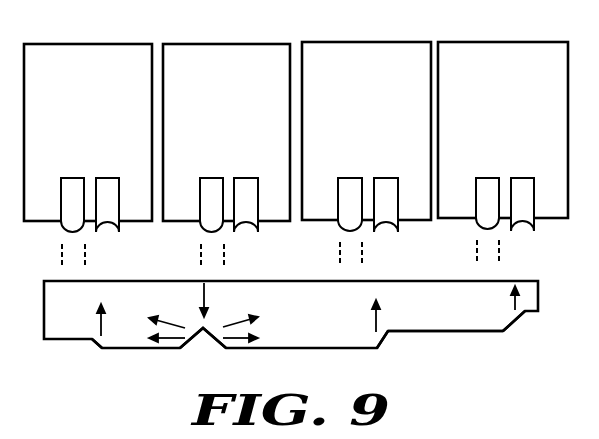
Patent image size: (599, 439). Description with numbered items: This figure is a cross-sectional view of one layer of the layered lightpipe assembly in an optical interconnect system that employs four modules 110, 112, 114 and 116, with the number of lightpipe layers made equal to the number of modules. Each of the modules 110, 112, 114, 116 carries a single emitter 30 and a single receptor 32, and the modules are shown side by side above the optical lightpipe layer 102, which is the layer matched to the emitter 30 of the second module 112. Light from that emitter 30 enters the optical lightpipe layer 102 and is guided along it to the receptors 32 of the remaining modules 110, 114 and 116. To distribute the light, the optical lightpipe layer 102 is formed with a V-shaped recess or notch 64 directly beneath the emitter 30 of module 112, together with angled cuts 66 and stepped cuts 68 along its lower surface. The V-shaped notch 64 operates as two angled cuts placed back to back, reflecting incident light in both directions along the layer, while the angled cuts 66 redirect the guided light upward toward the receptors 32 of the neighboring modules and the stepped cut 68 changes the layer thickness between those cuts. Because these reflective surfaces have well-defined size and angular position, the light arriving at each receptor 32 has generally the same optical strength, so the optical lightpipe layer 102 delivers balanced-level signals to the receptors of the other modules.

The module 110 is at (90, 44).
The module 112 is at (227, 44).
The module 114 is at (368, 42).
The module 116 is at (504, 42).
The emitter 30 is at (72, 178).
The receptor 32 is at (108, 178).
The optical lightpipe layer 102 is at (44, 332).
The V-shaped notch 64 is at (206, 339).
The angled cut 66 is at (97, 343).
The stepped cut 68 is at (443, 331).